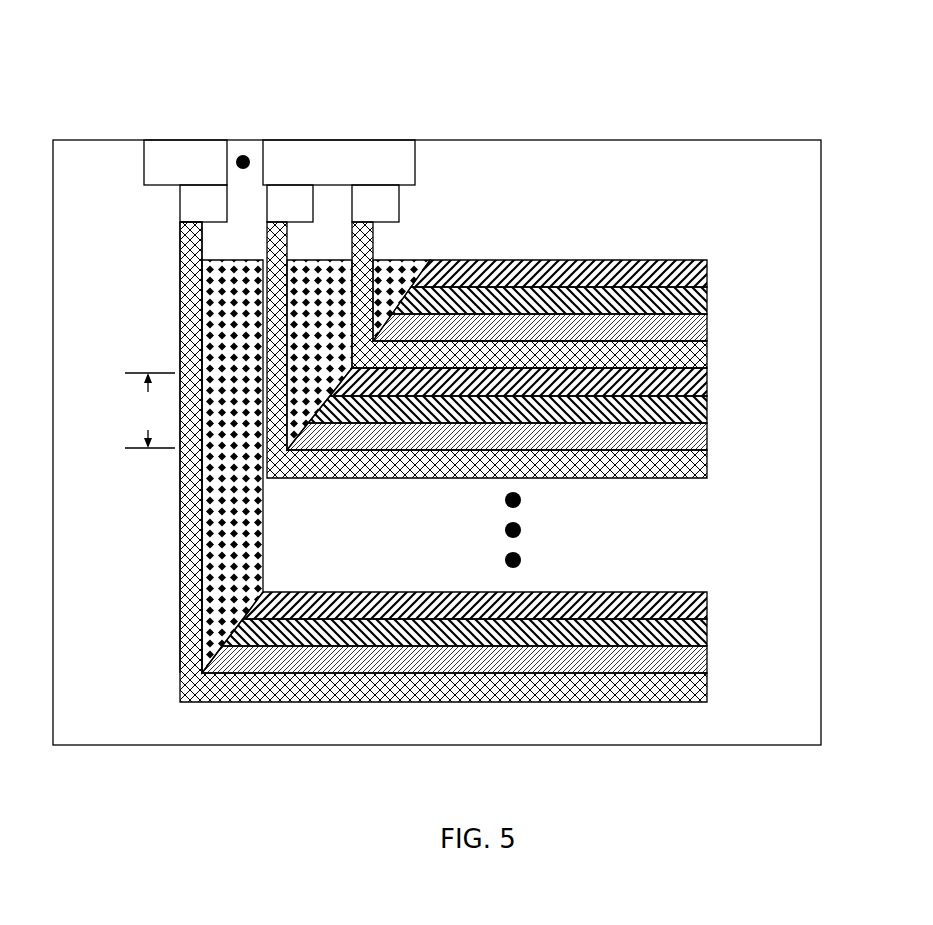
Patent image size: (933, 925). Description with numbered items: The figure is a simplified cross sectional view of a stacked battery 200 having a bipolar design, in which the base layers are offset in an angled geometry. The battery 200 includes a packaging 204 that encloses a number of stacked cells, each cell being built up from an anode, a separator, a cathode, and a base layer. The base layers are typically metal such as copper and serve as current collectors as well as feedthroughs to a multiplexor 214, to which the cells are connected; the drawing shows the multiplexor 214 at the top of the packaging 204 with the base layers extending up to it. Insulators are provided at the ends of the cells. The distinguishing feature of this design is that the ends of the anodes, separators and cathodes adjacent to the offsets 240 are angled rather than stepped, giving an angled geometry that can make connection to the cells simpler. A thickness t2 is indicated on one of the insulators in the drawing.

The battery 200 is at (813, 62).
The packaging 204 is at (813, 138).
The multiplexor 214 is at (417, 155).
The offset 240 is at (152, 584).
The thickness t2 is at (150, 410).